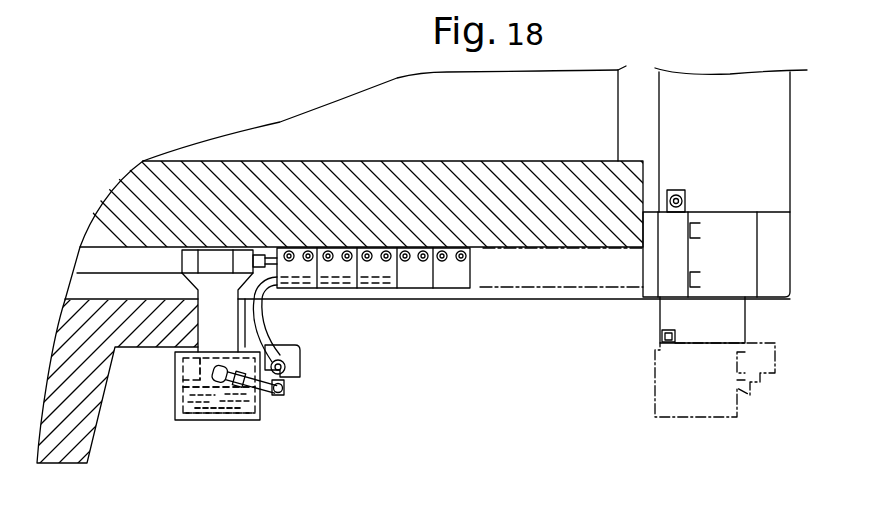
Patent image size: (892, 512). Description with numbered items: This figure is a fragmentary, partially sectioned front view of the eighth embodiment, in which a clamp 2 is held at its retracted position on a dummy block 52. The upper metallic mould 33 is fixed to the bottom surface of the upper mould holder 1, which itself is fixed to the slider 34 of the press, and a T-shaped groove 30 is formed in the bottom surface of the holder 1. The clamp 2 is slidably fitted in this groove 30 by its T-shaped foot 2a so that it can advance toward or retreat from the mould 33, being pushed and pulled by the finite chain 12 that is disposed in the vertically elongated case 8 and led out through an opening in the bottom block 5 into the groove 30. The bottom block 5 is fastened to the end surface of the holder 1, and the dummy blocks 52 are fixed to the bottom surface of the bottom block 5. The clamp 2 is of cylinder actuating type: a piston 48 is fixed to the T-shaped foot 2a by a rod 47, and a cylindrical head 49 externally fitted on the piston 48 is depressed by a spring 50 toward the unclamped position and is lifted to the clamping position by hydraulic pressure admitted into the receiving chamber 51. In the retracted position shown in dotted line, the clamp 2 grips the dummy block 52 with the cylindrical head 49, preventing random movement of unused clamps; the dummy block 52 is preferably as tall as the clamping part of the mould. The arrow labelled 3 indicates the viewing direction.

The upper mould holder 1 is at (133, 202).
The clamp 2 is at (264, 414).
The T-shaped foot 2a is at (217, 257).
The spinning machine 3 is at (694, 58).
The bottom block 5 is at (745, 260).
The case 8 is at (777, 153).
The chain 12 is at (412, 284).
The T-shaped groove 30 is at (88, 258).
The upper metallic mould 33 is at (83, 432).
The slider 34 is at (355, 108).
The rod 47 is at (217, 313).
The piston 48 is at (185, 387).
The cylindrical head 49 is at (182, 410).
The spring 50 is at (230, 413).
The receiving chamber 51 is at (192, 367).
The dummy block 52 is at (670, 315).